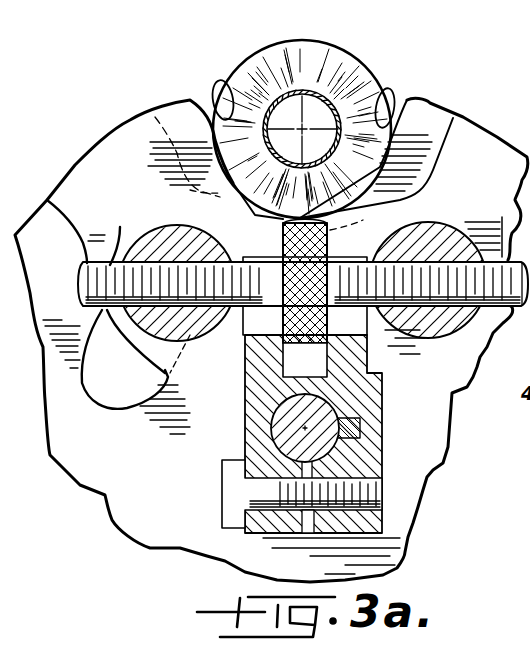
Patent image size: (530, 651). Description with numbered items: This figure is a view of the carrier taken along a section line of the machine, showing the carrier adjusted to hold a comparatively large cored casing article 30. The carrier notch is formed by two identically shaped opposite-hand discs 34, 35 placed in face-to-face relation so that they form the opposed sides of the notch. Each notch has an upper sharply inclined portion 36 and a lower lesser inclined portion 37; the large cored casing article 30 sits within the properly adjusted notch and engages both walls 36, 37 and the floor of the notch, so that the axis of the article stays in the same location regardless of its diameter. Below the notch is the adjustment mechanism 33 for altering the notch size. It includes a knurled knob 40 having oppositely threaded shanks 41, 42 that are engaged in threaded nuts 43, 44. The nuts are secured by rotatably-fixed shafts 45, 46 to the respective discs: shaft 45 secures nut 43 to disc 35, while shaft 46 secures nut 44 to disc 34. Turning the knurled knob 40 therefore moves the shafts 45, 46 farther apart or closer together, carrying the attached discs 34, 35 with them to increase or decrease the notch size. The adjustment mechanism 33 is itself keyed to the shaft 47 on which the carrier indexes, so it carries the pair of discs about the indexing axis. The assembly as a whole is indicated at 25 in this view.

The clamp assembly 25 is at (143, 112).
The cored casing article 30 is at (347, 50).
The adjustment mechanism 33 is at (403, 350).
The disc 34 is at (427, 112).
The disc 35 is at (117, 155).
The upper sharply inclined portion 36 is at (385, 90).
The lower lesser inclined portion 37 is at (228, 85).
The knurled knob 40 is at (315, 212).
The threaded shank 41 is at (126, 233).
The threaded shank 42 is at (303, 247).
The threaded nut 43 is at (121, 329).
The threaded nut 44 is at (452, 342).
The rotatably-fixed shaft 45 is at (153, 248).
The rotatably-fixed shaft 46 is at (457, 215).
The shaft 47 is at (287, 428).